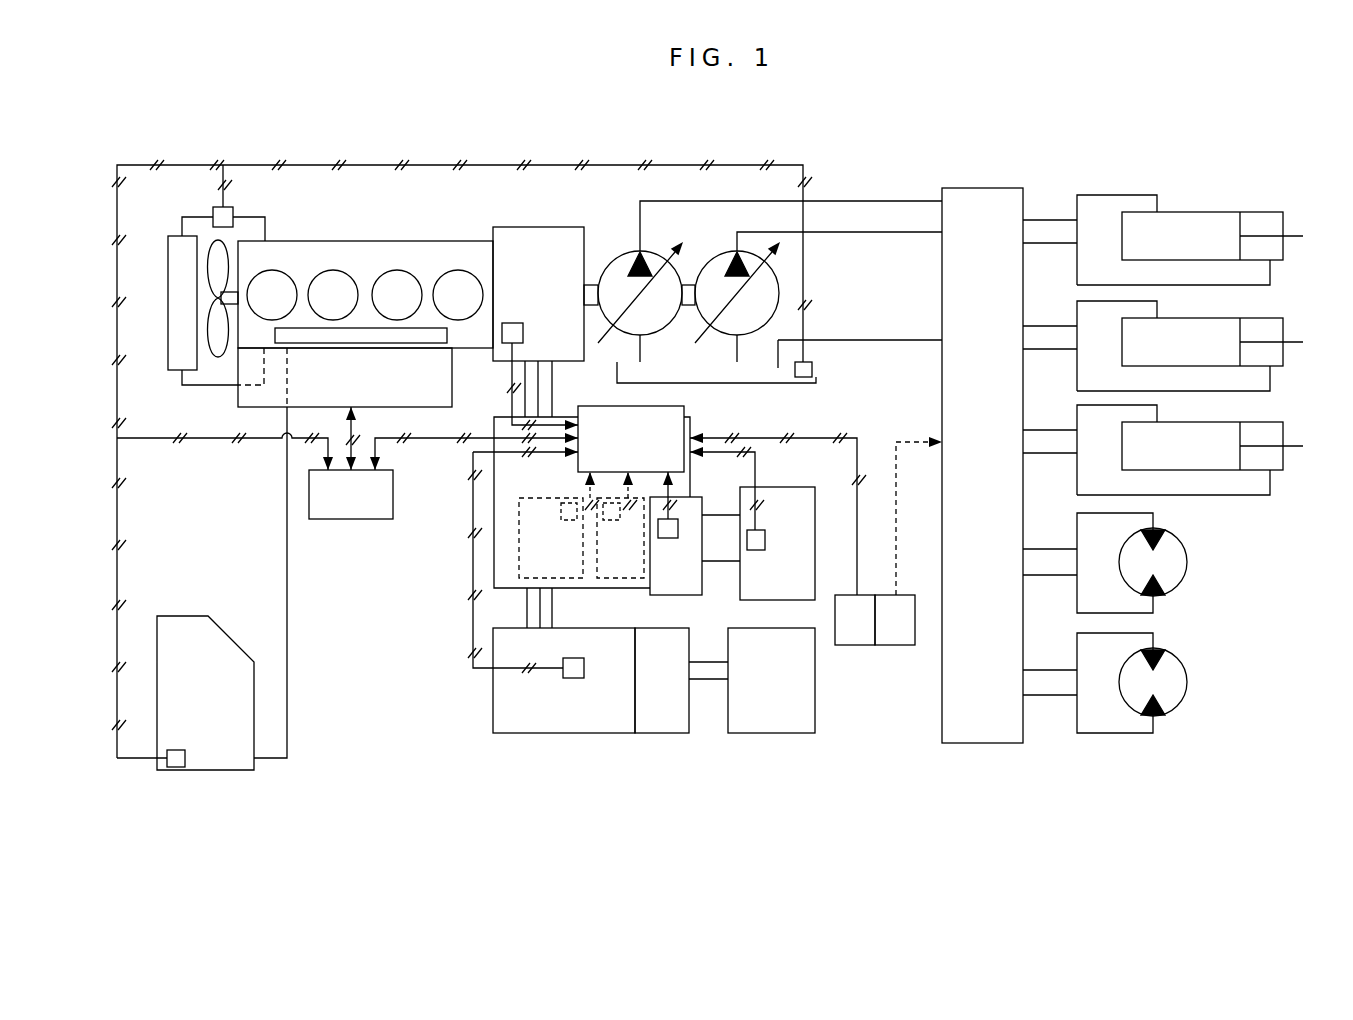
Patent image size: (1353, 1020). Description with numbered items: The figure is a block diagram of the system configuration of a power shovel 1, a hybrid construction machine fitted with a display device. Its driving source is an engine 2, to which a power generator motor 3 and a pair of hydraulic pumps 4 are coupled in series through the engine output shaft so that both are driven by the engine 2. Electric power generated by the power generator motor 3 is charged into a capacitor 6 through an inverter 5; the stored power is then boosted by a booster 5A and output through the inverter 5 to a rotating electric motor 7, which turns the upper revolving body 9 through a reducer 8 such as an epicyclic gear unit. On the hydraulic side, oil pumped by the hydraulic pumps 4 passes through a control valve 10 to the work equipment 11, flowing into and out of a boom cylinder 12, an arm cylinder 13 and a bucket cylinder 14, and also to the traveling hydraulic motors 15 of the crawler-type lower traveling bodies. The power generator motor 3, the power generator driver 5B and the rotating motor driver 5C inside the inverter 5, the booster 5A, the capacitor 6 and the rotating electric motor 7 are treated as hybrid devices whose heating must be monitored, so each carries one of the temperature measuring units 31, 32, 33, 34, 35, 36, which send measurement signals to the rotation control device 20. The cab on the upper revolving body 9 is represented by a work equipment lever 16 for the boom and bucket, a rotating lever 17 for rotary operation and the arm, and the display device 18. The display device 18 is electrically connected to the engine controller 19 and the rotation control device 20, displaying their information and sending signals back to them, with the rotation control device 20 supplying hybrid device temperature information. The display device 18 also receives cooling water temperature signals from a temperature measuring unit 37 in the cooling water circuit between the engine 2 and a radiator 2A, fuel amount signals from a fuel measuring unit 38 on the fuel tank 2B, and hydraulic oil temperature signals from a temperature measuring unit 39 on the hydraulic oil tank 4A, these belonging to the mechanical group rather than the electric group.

The power shovel 1 is at (933, 122).
The engine 2 is at (372, 241).
The radiator 2A is at (168, 322).
The fuel tank 2B is at (182, 625).
The power generator motor 3 is at (540, 240).
The hydraulic pumps 4 is at (618, 266).
The hydraulic oil tank 4A is at (785, 384).
The inverter 5 is at (494, 561).
The booster 5A is at (690, 586).
The power generator driver 5B is at (519, 505).
The rotating motor driver 5C is at (638, 578).
The capacitor 6 is at (778, 488).
The rotating electric motor 7 is at (565, 733).
The reducer 8 is at (662, 733).
The upper revolving body 9 is at (768, 733).
The control valve 10 is at (975, 744).
The work equipment 11 is at (1223, 153).
The boom cylinder 12 is at (1274, 212).
The arm cylinder 13 is at (1274, 318).
The bucket cylinder 14 is at (1274, 422).
The traveling hydraulic motors 15 is at (1178, 565).
The work equipment lever 16 is at (895, 646).
The rotating lever 17 is at (857, 646).
The display device 18 is at (351, 505).
The engine controller 19 is at (445, 385).
The rotation control device 20 is at (578, 466).
The temperature measuring unit 31 is at (512, 323).
The temperature measuring unit 32 is at (568, 520).
The temperature measuring unit 33 is at (610, 520).
The temperature measuring unit 34 is at (680, 523).
The temperature measuring unit 35 is at (765, 541).
The temperature measuring unit 36 is at (584, 668).
The temperature measuring unit 37 is at (233, 213).
The fuel measuring unit 38 is at (176, 768).
The temperature measuring unit 39 is at (812, 370).